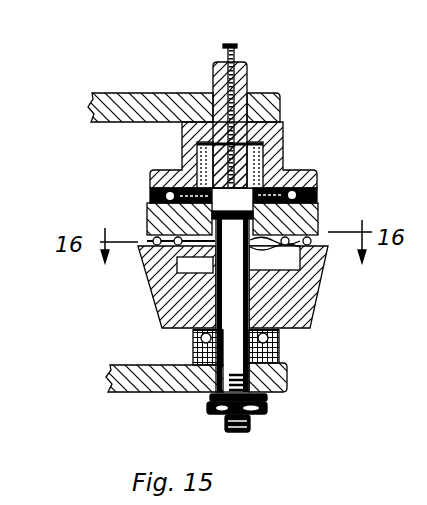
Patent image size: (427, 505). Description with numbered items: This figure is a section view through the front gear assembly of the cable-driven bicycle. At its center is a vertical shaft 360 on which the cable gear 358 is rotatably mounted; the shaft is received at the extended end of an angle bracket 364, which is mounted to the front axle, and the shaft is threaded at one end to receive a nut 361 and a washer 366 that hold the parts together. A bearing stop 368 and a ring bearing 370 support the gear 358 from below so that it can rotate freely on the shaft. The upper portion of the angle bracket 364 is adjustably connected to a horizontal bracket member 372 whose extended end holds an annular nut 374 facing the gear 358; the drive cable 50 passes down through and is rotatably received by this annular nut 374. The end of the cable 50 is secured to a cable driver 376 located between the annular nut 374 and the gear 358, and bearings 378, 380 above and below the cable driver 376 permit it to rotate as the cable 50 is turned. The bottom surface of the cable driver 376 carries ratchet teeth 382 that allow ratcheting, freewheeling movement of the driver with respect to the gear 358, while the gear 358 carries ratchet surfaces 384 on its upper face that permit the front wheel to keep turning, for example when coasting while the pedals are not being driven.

The cable 50 is at (224, 47).
The cable gear 358 is at (138, 292).
The vertical shaft 360 is at (292, 298).
The nut 361 is at (207, 406).
The angle bracket 364 is at (141, 385).
The washer 366 is at (268, 397).
The bearing stop 368 is at (192, 355).
The ring bearing 370 is at (178, 336).
The horizontal bracket member 372 is at (116, 108).
The annular nut 374 is at (270, 132).
The cable driver 376 is at (320, 195).
The bearing 378 is at (150, 190).
The bearing 380 is at (148, 226).
The ratchet teeth 382 is at (318, 214).
The ratchet surfaces 384 is at (305, 262).